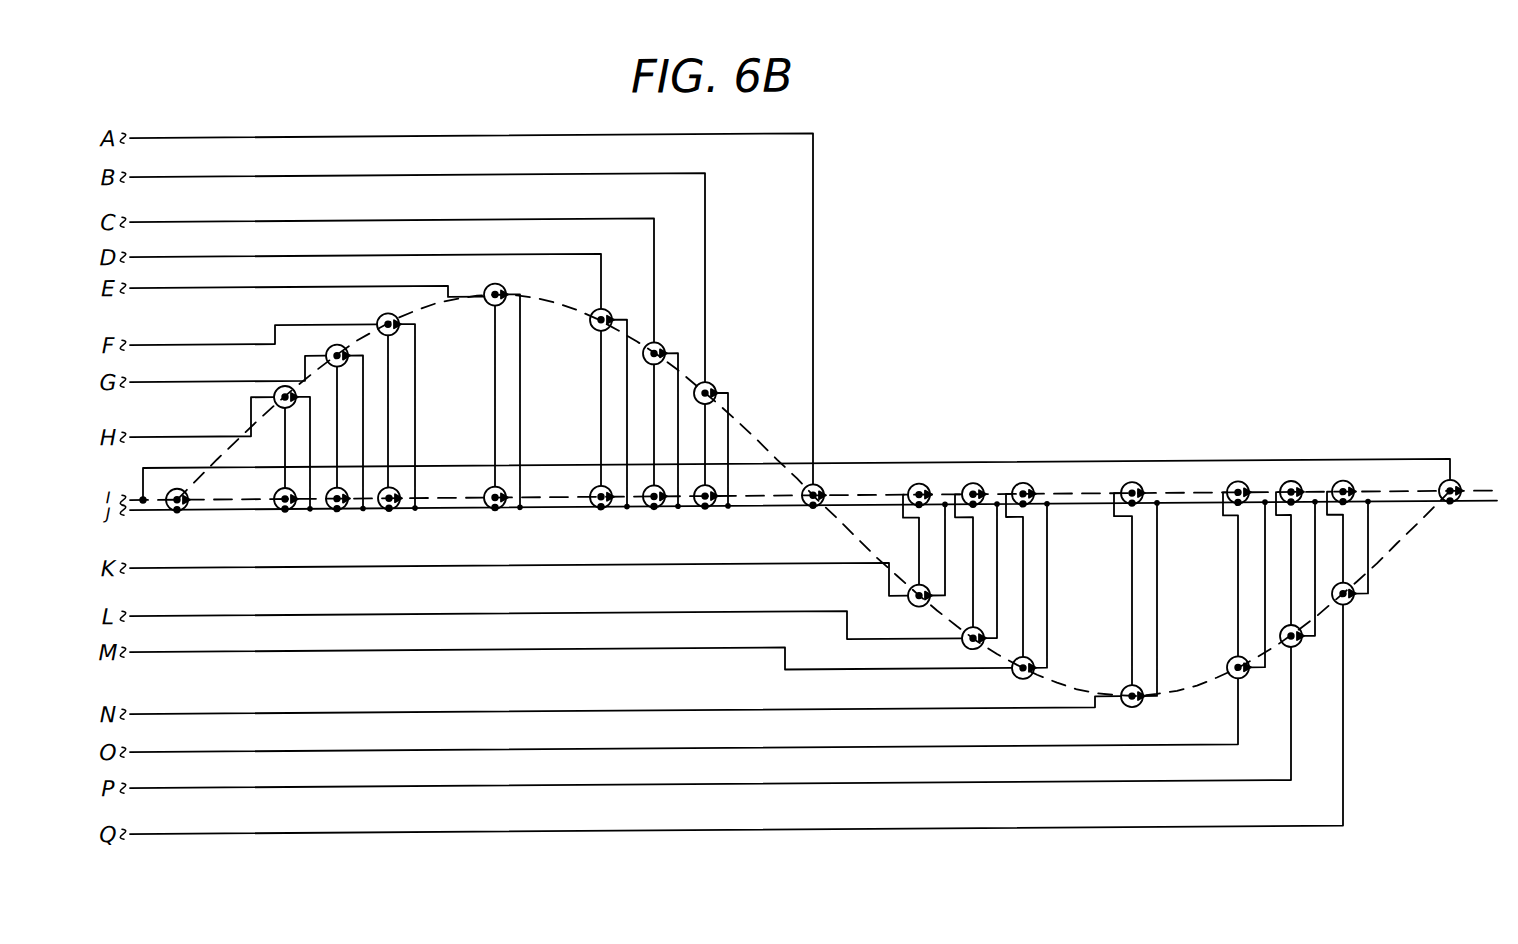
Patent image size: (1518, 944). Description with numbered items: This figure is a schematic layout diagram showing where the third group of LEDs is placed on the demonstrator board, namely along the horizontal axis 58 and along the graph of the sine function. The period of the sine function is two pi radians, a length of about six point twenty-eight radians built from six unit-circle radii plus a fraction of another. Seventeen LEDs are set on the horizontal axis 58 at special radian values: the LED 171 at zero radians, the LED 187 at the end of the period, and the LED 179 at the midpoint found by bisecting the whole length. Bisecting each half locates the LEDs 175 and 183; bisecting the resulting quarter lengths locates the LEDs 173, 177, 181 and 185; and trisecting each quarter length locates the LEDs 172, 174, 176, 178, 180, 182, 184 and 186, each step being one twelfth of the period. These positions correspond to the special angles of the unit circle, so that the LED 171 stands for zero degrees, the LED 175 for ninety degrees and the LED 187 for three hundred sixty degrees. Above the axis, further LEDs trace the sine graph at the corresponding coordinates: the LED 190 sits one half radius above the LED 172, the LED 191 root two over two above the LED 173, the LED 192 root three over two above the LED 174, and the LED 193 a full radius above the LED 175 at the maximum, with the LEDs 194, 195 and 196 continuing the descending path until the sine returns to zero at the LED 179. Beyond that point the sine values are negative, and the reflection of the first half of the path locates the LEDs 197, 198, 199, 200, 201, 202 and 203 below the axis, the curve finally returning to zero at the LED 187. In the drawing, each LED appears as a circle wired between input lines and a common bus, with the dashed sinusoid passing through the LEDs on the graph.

The horizontal axis 58 is at (864, 502).
The LED 171 is at (186, 494).
The LED 172 is at (276, 496).
The LED 173 is at (332, 514).
The LED 174 is at (386, 514).
The LED 175 is at (493, 514).
The LED 176 is at (598, 514).
The LED 177 is at (652, 514).
The LED 178 is at (703, 514).
The LED 179 is at (806, 510).
The LED 180 is at (921, 490).
The LED 181 is at (975, 490).
The LED 182 is at (1025, 490).
The LED 183 is at (1132, 490).
The LED 184 is at (1238, 490).
The LED 185 is at (1291, 490).
The LED 186 is at (1343, 490).
The LED 187 is at (1452, 490).
The LED 190 is at (284, 388).
The LED 191 is at (330, 349).
The LED 192 is at (383, 316).
The LED 193 is at (495, 287).
The LED 194 is at (597, 313).
The LED 195 is at (660, 347).
The LED 196 is at (713, 388).
The LED 197 is at (910, 610).
The LED 198 is at (965, 653).
The LED 199 is at (1015, 683).
The LED 200 is at (1130, 715).
The LED 201 is at (1230, 684).
The LED 202 is at (1298, 656).
The LED 203 is at (1354, 609).